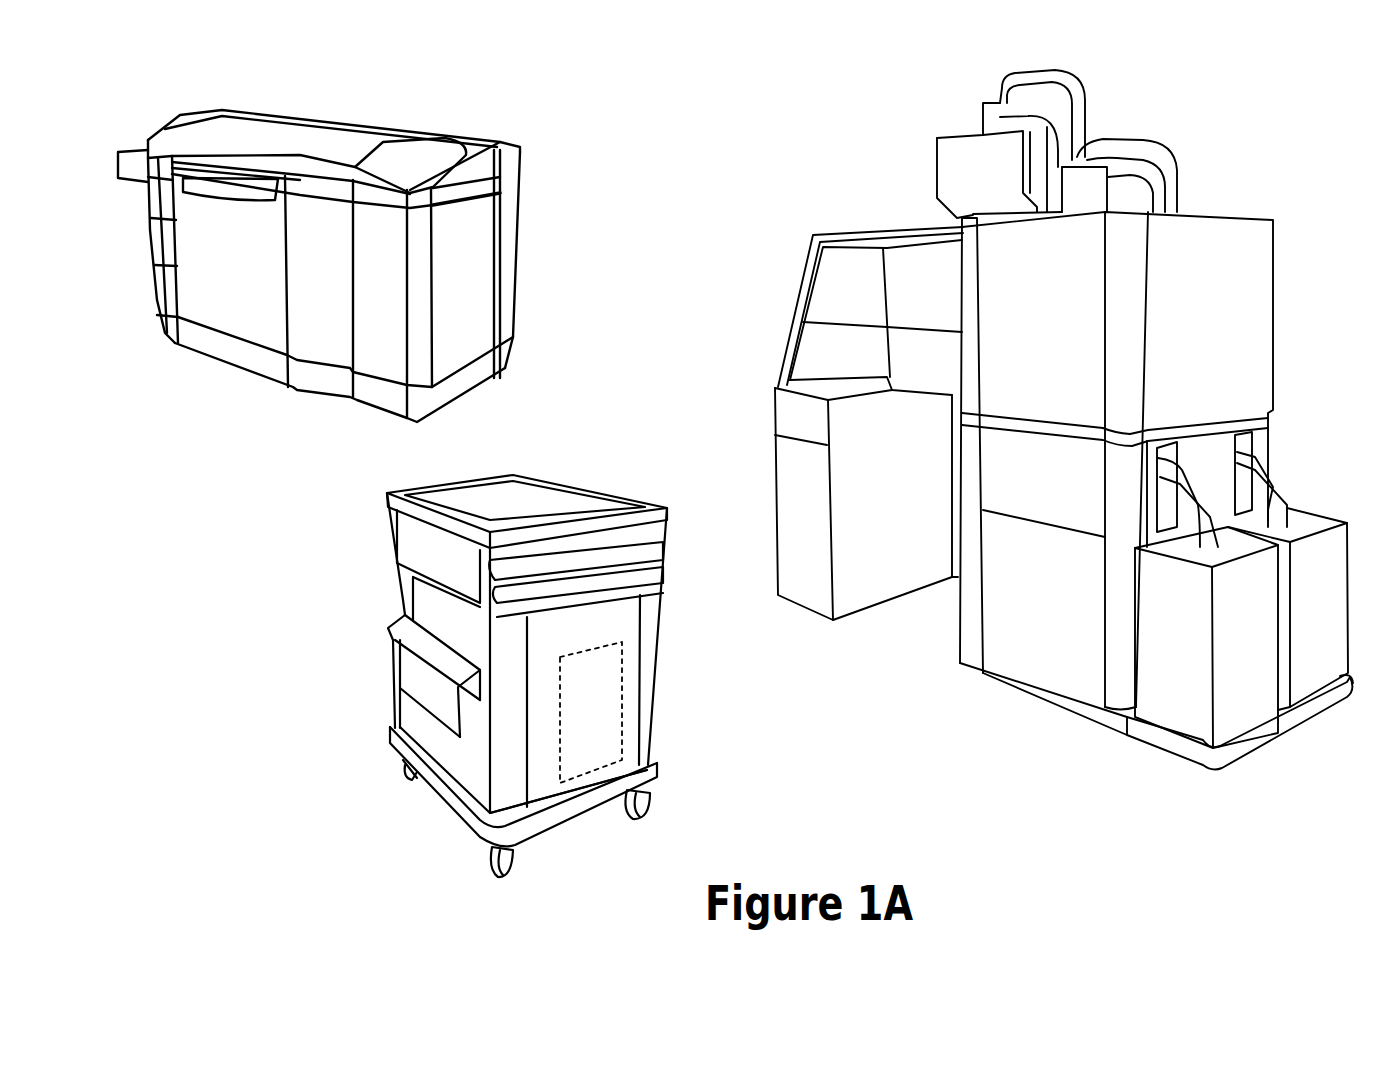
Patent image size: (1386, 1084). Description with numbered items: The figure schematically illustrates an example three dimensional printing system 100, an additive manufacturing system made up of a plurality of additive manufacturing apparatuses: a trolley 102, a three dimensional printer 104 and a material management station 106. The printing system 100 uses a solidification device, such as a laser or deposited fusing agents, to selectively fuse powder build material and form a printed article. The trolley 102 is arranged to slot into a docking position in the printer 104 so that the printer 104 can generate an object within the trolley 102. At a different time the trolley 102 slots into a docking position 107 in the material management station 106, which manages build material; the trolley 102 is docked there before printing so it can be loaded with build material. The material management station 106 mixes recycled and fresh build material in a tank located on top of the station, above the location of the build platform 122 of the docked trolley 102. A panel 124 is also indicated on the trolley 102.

The 3D printing system 100 is at (697, 205).
The trolley 102 is at (567, 634).
The 3D printer 104 is at (517, 190).
The material management station 106 is at (1246, 213).
The docking position 107 is at (910, 609).
The build platform 122 is at (495, 501).
The cart panel 124 is at (622, 706).